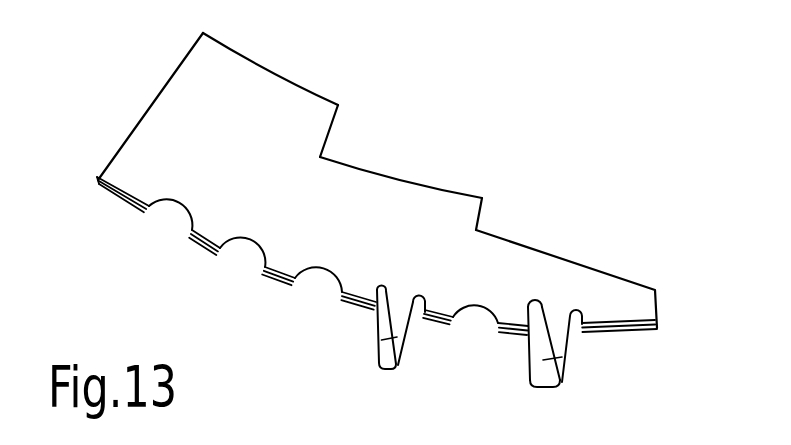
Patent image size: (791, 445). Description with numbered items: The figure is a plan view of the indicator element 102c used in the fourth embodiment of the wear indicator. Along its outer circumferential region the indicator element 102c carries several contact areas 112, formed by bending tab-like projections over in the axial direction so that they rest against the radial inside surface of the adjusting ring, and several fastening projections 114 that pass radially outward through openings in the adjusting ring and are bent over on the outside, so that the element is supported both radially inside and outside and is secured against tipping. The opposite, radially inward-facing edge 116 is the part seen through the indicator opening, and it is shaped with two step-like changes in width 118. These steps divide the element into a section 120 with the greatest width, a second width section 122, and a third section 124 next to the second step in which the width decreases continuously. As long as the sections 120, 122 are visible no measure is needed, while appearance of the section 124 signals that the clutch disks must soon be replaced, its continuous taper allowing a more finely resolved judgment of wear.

The indicator element 102c is at (408, 147).
The contact areas 112 is at (215, 250).
The fastening projections 114 is at (563, 378).
The radially inward-facing edge 116 is at (460, 190).
The step-like changes in width 118 is at (332, 132).
The section with the greatest width 120 is at (200, 145).
The second width section 122 is at (368, 250).
The third section 124 is at (528, 298).